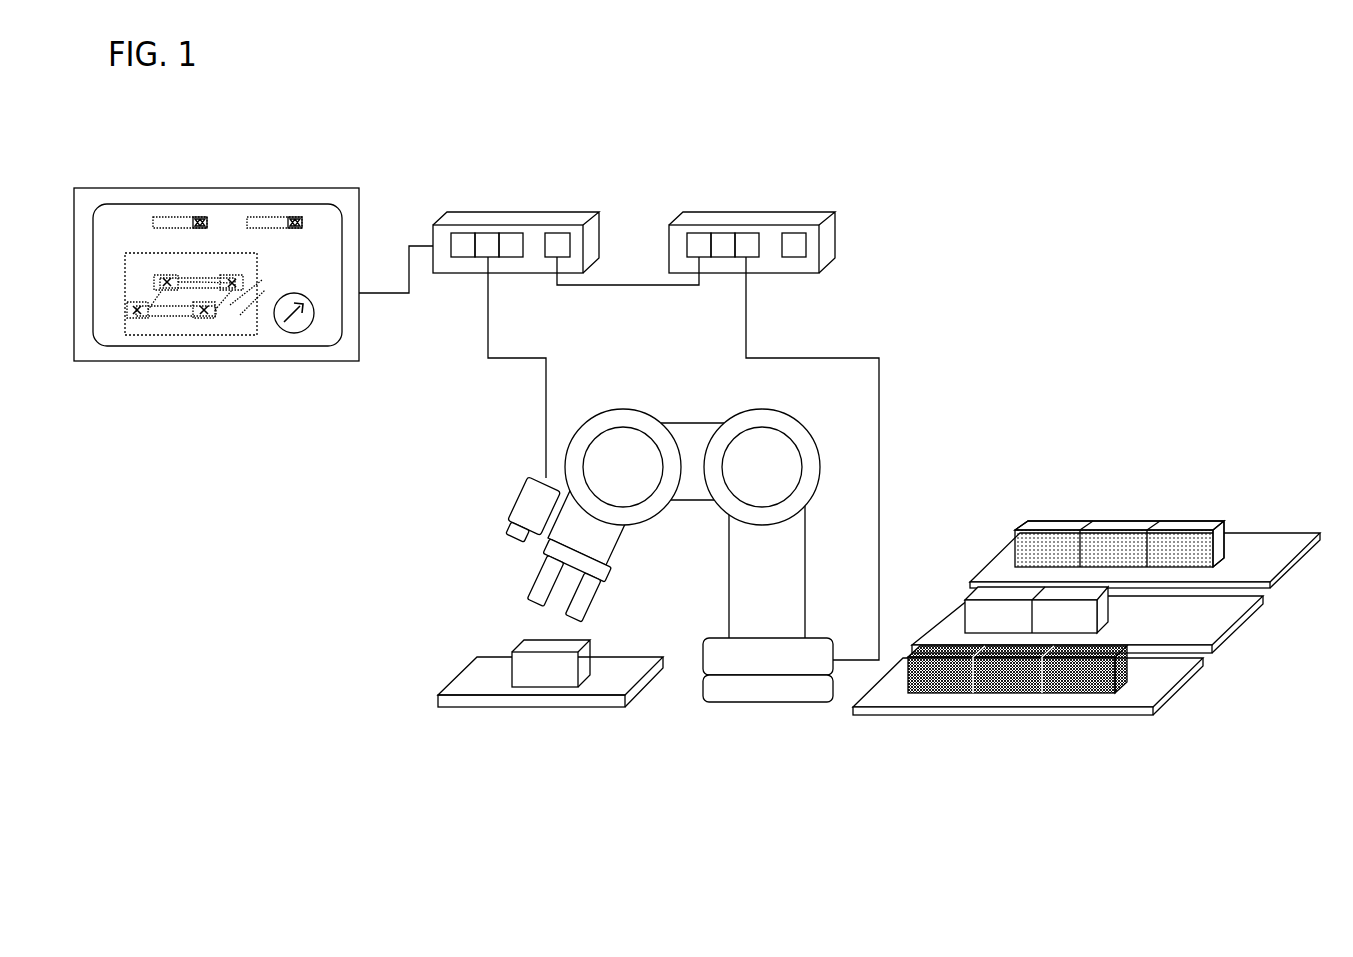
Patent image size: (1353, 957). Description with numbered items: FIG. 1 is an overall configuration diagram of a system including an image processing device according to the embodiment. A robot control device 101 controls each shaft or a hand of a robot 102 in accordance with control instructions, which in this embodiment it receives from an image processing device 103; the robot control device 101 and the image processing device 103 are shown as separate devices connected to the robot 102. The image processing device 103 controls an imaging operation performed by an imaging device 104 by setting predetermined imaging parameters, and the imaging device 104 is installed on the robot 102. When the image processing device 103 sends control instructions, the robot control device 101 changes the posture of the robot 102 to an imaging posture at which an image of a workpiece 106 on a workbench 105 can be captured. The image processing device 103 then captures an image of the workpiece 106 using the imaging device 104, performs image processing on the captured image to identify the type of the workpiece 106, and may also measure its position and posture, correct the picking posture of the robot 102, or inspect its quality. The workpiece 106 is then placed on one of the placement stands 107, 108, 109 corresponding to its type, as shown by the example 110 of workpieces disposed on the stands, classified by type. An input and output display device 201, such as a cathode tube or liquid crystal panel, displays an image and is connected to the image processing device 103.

The robot control device 101 is at (763, 212).
The robot 102 is at (803, 422).
The image processing device 103 is at (523, 212).
The imaging device 104 is at (518, 492).
The workbench 105 is at (543, 707).
The workpiece 106 is at (520, 642).
The placement stand 107 is at (1177, 697).
The placement stand 108 is at (1235, 632).
The placement stand 109 is at (1290, 570).
The example of a workpiece disposed 110 is at (1050, 521).
The input and output display device 201 is at (216, 188).